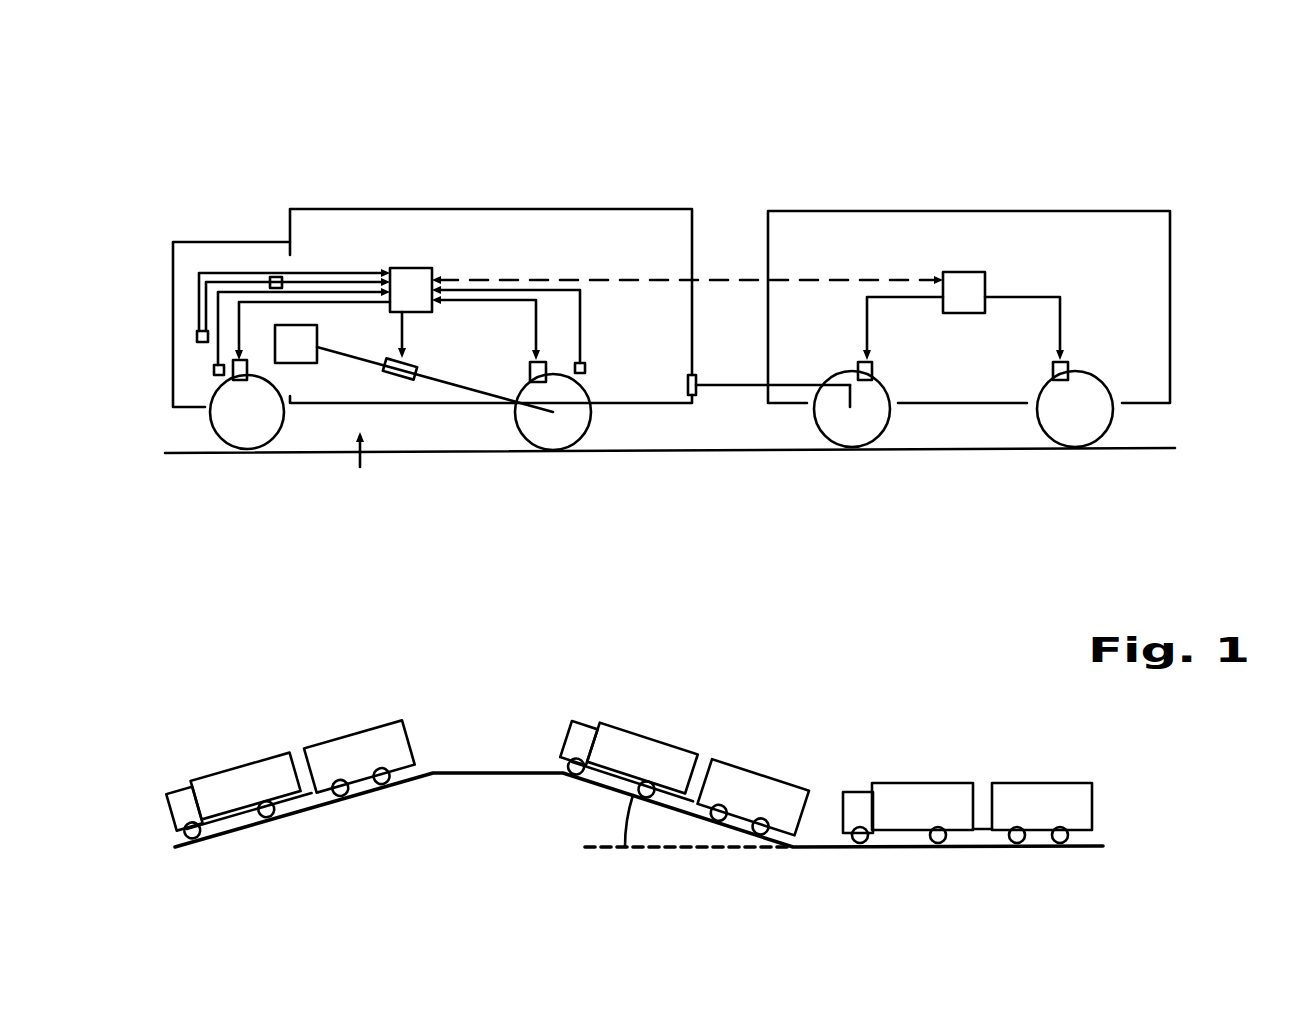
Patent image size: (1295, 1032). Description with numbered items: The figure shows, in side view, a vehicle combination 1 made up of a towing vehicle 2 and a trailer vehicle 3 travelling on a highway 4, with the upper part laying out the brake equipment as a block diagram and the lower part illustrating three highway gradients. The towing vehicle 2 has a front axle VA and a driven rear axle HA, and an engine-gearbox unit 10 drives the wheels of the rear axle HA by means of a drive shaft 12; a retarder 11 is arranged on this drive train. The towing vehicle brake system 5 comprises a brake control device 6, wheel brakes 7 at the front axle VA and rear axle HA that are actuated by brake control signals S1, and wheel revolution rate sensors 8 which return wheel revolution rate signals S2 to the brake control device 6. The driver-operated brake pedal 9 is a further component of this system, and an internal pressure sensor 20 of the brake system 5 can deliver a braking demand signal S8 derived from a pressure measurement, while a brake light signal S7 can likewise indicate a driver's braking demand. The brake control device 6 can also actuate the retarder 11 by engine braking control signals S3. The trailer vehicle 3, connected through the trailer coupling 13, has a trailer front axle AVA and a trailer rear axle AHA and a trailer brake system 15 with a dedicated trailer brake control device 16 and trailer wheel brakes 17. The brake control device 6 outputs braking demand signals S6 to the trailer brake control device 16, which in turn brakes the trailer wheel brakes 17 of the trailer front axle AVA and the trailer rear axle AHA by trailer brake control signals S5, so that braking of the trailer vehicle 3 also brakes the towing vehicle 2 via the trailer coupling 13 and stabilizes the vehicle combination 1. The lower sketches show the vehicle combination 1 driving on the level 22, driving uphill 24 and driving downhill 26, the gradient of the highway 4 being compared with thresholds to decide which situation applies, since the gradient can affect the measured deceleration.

The vehicle combination 1 is at (1134, 152).
The towing vehicle 2 is at (627, 208).
The trailer vehicle 3 is at (908, 211).
The highway 4 is at (773, 450).
The towing vehicle brake system 5 is at (362, 488).
The brake control device 6 is at (413, 290).
The wheel brakes 7 is at (238, 380).
The wheel revolution rate sensors 8 is at (217, 375).
The brake pedal 9 is at (193, 335).
The engine-gearbox unit 10 is at (295, 350).
The retarder 11 is at (400, 378).
The drive shaft 12 is at (466, 365).
The trailer coupling 13 is at (722, 387).
The trailer brake system 15 is at (1058, 236).
The trailer brake control device 16 is at (963, 290).
The trailer wheel brakes 17 is at (872, 385).
The internal pressure sensor 20 is at (275, 277).
The driving on the level 22 is at (951, 764).
The driving uphill 24 is at (700, 692).
The driving downhill 26 is at (208, 707).
The brake control signals S1 is at (255, 302).
The wheel revolution rate signals S2 is at (352, 291).
The engine braking control signals S3 is at (402, 335).
The trailer brake control signals S5 is at (867, 338).
The braking demand signals S6 is at (732, 280).
The brake light signal S7 is at (230, 273).
The braking demand signal S8 is at (303, 282).
The front axle VA is at (247, 412).
The rear axle HA is at (553, 412).
The trailer front axle AVA is at (850, 410).
The trailer rear axle AHA is at (1075, 410).